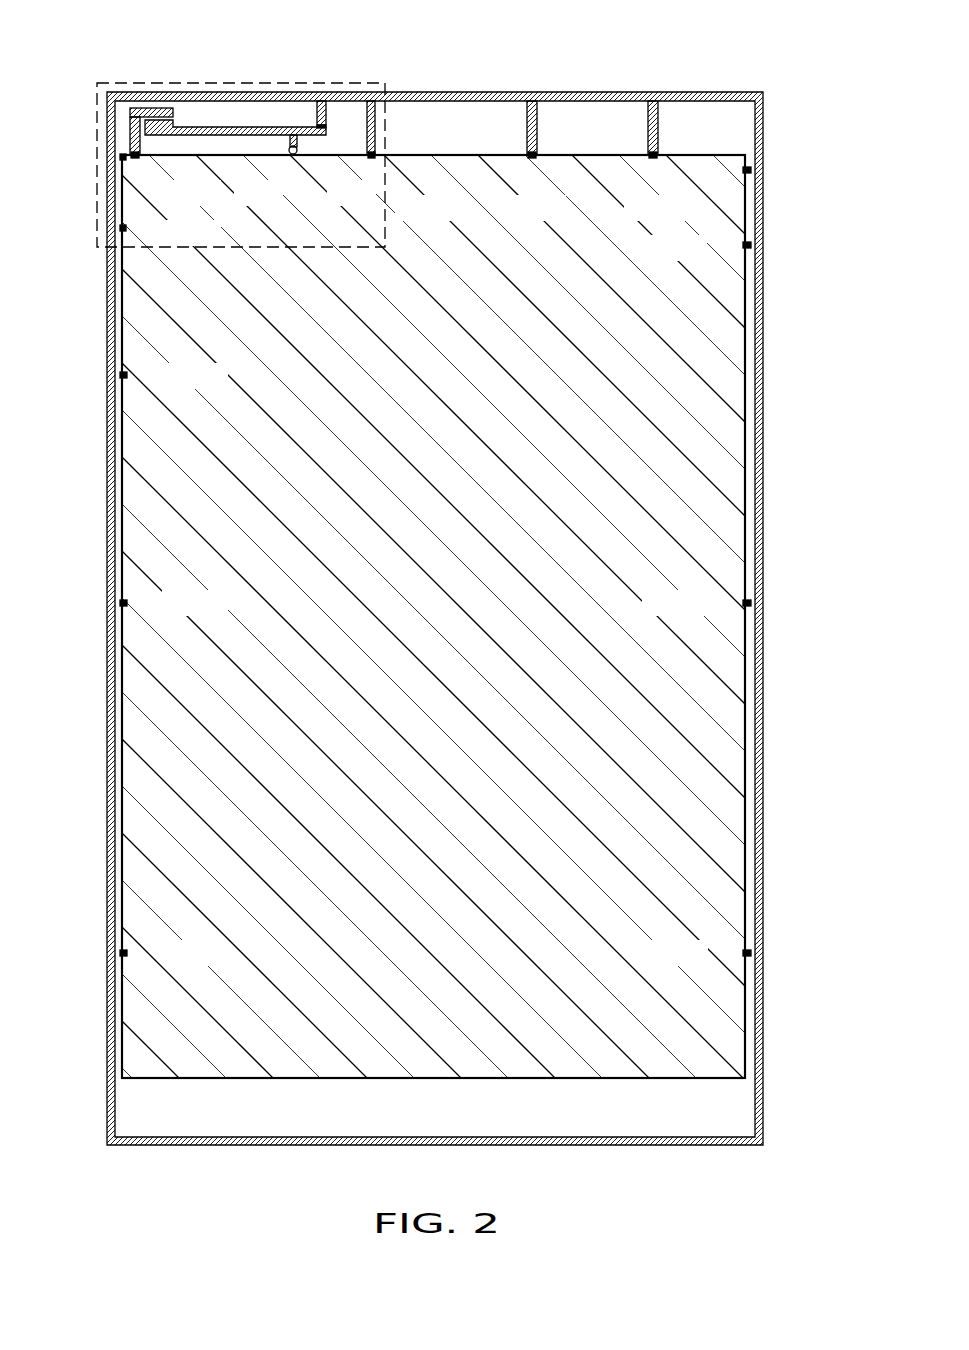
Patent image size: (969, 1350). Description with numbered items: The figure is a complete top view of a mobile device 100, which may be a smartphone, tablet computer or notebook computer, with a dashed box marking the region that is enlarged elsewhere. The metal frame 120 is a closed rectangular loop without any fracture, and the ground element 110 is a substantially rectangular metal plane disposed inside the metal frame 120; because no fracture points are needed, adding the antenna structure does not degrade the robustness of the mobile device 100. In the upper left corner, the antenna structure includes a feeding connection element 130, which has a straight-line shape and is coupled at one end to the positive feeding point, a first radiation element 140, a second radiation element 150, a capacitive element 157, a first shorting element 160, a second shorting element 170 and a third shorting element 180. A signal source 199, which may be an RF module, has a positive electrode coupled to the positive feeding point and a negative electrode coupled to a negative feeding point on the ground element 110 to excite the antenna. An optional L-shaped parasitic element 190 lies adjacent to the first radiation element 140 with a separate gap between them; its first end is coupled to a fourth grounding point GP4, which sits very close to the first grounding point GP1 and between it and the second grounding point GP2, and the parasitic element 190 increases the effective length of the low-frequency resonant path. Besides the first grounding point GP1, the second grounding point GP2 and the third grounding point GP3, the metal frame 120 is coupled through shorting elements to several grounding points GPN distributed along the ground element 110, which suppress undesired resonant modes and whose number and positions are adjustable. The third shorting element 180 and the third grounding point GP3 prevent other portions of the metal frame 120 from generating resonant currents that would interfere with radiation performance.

The mobile device 100 is at (80, 40).
The ground element 110 is at (718, 752).
The metal frame 120 is at (218, 92).
The feeding connection element 130 is at (293, 126).
The first radiation element 140 is at (215, 127).
The second radiation element 150 is at (326, 110).
The capacitive element 157 is at (327, 118).
The first shorting element 160 is at (122, 175).
The second shorting element 170 is at (377, 126).
The third shorting element 180 is at (97, 248).
The parasitic element 190 is at (133, 128).
The signal source 199 is at (289, 150).
The first grounding point GP1 is at (131, 157).
The second grounding point GP2 is at (373, 158).
The third grounding point GP3 is at (127, 230).
The fourth grounding point GP4 is at (135, 156).
The grounding points GPN is at (745, 170).